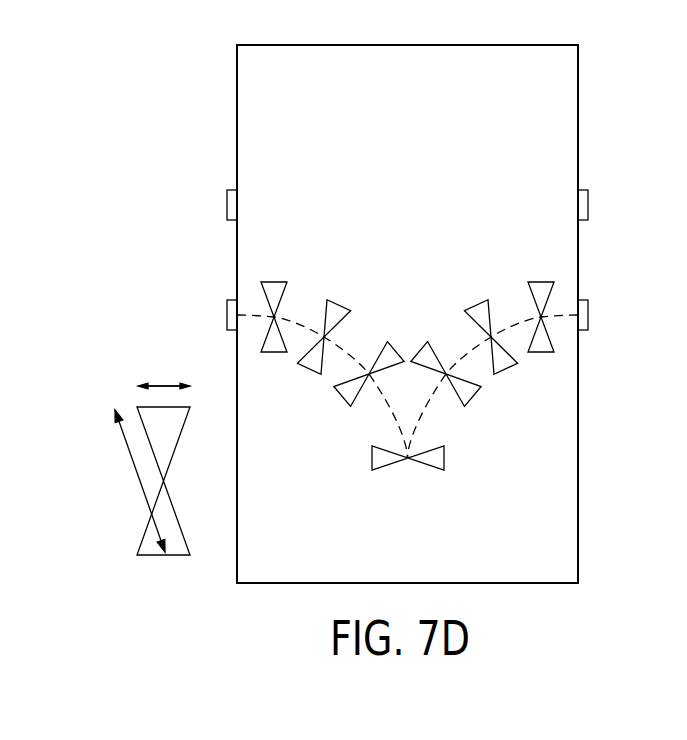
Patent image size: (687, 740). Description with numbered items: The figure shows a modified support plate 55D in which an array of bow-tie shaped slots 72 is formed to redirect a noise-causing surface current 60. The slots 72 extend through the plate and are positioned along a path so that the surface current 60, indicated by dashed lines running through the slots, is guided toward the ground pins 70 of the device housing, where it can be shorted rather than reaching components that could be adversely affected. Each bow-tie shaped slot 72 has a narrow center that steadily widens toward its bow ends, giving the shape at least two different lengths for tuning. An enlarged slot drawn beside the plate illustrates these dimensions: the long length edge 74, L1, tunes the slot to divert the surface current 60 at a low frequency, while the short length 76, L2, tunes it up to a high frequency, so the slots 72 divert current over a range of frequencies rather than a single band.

The modified support plate 55D is at (208, 68).
The ground pins 70 is at (227, 205).
The bow-tie shaped slots 72 is at (274, 295).
The surface current 60 is at (426, 407).
The long length edge 74 is at (92, 483).
The short length 76 is at (163, 340).
The long length L1 is at (132, 481).
The short length L2 is at (164, 366).